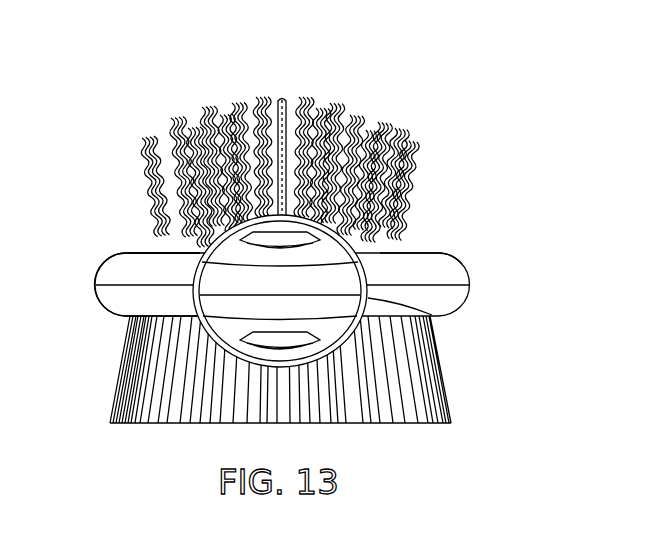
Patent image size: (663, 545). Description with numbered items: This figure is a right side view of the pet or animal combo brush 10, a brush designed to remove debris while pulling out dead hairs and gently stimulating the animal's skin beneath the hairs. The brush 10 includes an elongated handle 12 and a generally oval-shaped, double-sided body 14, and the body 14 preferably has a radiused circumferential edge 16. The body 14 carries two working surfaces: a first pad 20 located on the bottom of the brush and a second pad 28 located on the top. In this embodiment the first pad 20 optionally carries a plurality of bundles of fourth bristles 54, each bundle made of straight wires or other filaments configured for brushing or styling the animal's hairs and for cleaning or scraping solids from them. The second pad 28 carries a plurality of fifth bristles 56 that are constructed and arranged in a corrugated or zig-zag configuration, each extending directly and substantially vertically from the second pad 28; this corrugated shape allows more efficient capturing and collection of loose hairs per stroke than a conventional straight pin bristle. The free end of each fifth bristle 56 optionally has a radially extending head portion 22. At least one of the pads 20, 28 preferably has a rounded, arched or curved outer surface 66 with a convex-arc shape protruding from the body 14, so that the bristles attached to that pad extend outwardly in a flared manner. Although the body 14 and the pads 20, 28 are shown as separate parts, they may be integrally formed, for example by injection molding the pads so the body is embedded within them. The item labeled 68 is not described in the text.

The combo brush 10 is at (108, 99).
The elongated handle 12 is at (262, 280).
The body 14 is at (100, 305).
The radiused circumferential edge 16 is at (100, 268).
The first pad 20 is at (130, 319).
The radially extending head portion 22 is at (137, 147).
The second pad 28 is at (140, 248).
The fourth bristles 54 is at (157, 425).
The fifth bristles 56 is at (227, 107).
The rounded outer surface 66 is at (422, 249).
The outer tuft 68 is at (420, 250).